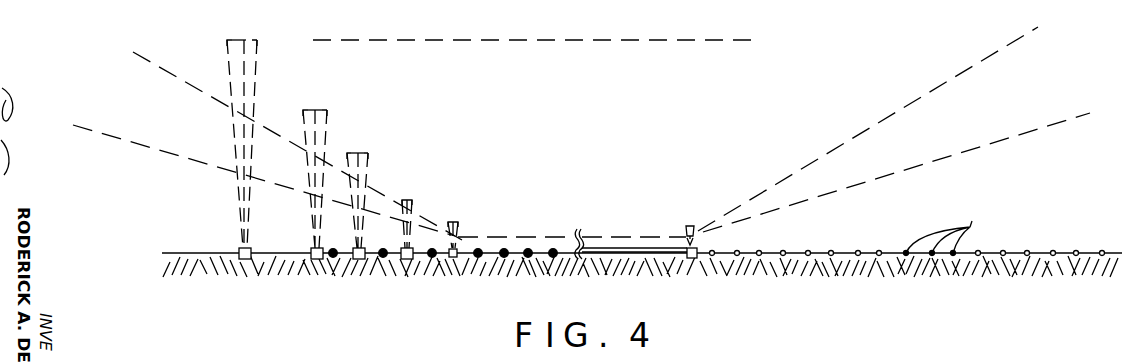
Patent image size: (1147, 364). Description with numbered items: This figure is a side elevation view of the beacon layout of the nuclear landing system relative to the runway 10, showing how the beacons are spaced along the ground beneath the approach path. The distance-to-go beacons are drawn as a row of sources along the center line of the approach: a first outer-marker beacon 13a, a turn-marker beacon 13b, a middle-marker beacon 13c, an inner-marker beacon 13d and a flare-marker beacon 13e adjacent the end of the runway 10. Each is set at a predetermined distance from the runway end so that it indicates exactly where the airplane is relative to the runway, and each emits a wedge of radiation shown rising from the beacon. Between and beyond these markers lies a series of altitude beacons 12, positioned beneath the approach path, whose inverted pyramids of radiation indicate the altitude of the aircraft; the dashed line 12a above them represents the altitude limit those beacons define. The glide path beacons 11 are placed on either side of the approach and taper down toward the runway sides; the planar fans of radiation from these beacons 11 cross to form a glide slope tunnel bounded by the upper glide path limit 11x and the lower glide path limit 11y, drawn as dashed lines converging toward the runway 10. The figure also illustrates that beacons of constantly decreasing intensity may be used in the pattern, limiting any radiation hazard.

The runway 10 is at (629, 248).
The glide path beacons 11 is at (945, 231).
The upper glide path limit 11x is at (168, 70).
The lower glide path limit 11y is at (165, 152).
The altitude beacons 12 is at (529, 250).
The datum line 12a is at (632, 40).
The outer-marker beacon 13a is at (262, 45).
The turn-marker beacon 13b is at (328, 112).
The middle-marker beacon 13c is at (369, 156).
The inner-marker beacon 13d is at (414, 205).
The flare-marker beacon 13e is at (477, 218).